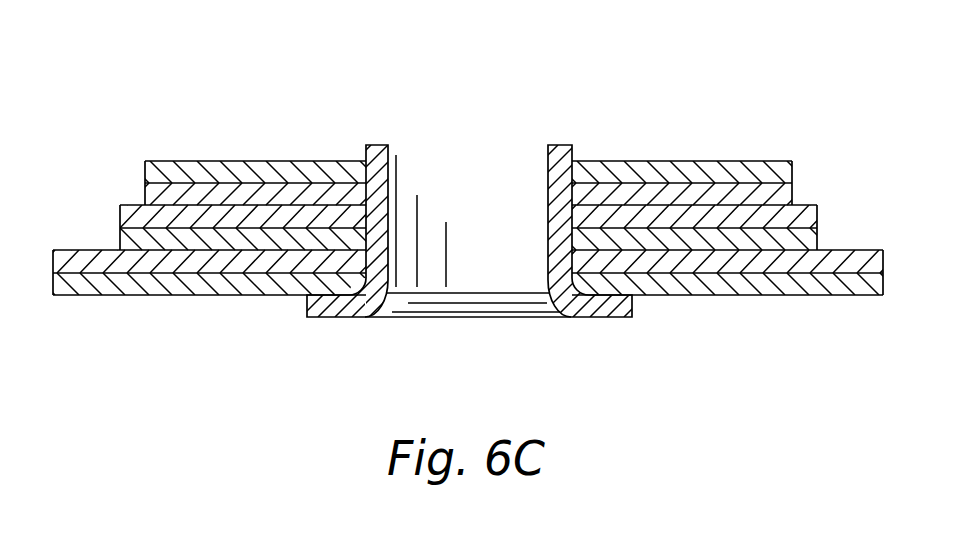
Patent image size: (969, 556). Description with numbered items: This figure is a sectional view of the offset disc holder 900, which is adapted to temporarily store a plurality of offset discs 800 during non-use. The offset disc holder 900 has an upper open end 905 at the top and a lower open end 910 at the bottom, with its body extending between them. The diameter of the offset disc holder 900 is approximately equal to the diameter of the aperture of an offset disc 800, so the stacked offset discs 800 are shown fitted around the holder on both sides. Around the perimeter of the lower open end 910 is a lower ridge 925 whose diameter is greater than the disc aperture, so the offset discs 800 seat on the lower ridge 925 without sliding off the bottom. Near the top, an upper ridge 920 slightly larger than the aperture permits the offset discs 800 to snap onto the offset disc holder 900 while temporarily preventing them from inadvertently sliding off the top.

The offset disc 800 is at (840, 330).
The offset disc holder 900 is at (533, 70).
The upper open end 905 is at (443, 138).
The lower open end 910 is at (500, 326).
The upper ridge 920 is at (557, 143).
The lower ridge 925 is at (307, 302).